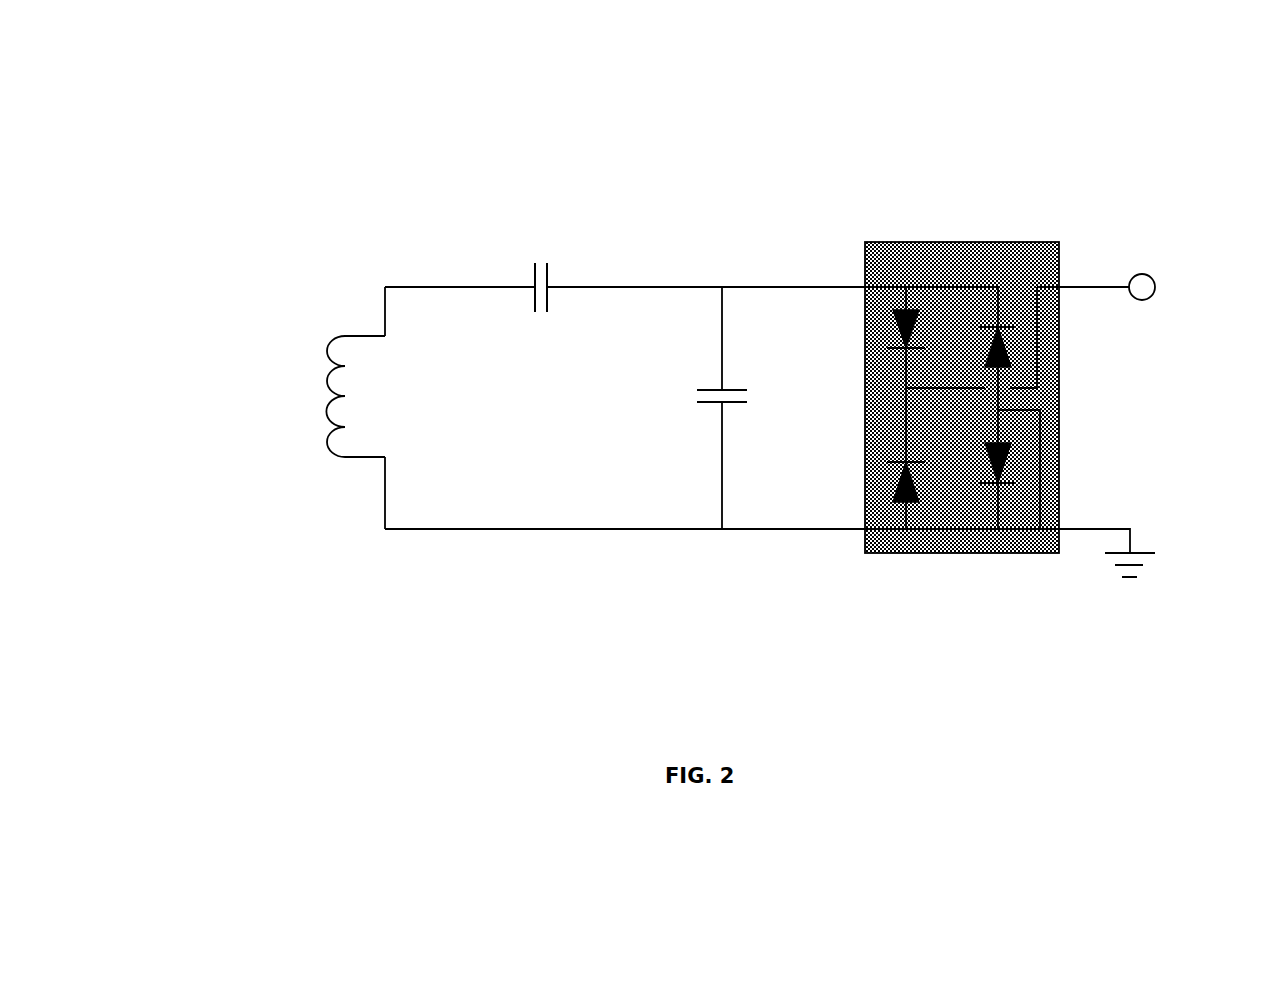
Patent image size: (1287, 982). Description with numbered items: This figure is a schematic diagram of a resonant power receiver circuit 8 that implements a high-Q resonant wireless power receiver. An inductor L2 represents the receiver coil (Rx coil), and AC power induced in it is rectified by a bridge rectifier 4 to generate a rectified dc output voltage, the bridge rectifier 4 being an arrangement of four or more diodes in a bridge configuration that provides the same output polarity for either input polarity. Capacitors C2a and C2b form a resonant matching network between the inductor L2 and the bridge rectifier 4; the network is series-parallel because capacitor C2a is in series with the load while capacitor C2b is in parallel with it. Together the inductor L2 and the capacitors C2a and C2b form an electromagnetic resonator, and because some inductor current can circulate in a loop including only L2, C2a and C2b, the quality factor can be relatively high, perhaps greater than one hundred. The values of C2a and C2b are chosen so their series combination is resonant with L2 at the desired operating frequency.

The resonant power receiver circuit 8 is at (265, 125).
The bridge rectifier 4 is at (963, 233).
The inductor L2 is at (279, 396).
The capacitor C2a is at (527, 313).
The capacitor C2b is at (689, 408).